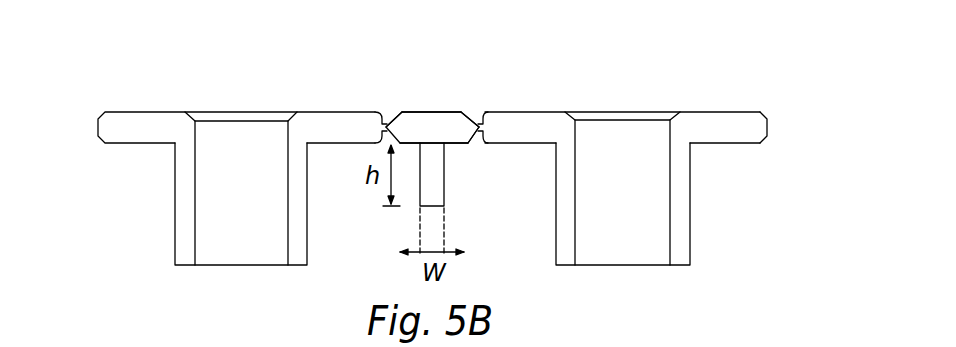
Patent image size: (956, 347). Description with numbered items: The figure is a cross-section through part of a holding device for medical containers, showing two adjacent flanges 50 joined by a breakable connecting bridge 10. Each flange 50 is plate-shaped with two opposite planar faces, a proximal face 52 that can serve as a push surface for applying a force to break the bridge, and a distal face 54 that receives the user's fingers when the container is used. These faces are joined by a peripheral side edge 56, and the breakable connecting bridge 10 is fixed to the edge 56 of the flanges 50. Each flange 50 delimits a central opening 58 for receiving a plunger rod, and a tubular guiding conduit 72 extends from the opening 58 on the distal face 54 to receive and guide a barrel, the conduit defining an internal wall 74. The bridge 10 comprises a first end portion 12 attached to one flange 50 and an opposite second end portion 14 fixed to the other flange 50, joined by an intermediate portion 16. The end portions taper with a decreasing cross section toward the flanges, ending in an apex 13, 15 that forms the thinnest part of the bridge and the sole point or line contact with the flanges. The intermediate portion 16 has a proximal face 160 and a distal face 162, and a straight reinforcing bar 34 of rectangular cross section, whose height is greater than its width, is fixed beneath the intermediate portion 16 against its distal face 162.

The breakable connecting bridge 10 is at (470, 144).
The first end portion 12 is at (388, 124).
The apex 13 is at (381, 125).
The second end portion 14 is at (474, 124).
The apex 15 is at (486, 126).
The intermediate portion 16 is at (425, 125).
The proximal face 160 is at (439, 108).
The distal face 162 is at (436, 152).
The reinforcing bar 34 is at (428, 192).
The flange 50 is at (106, 118).
The proximal face 52 is at (719, 110).
The distal face 54 is at (740, 147).
The peripheral side edge 56 is at (768, 128).
The central opening 58 is at (616, 112).
The guiding conduit 72 is at (613, 248).
The internal wall 74 is at (668, 225).